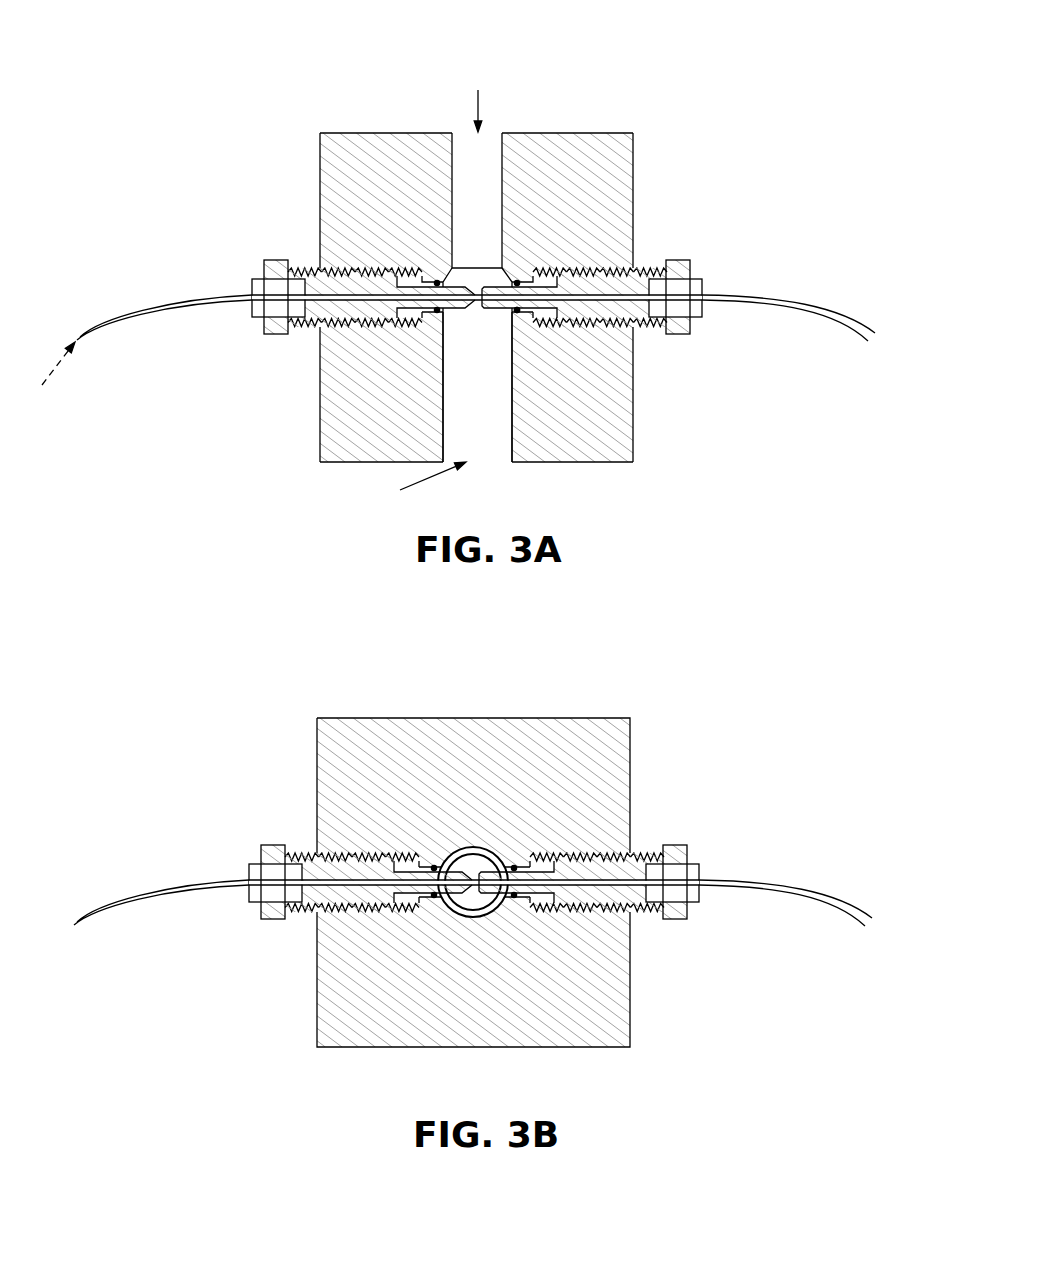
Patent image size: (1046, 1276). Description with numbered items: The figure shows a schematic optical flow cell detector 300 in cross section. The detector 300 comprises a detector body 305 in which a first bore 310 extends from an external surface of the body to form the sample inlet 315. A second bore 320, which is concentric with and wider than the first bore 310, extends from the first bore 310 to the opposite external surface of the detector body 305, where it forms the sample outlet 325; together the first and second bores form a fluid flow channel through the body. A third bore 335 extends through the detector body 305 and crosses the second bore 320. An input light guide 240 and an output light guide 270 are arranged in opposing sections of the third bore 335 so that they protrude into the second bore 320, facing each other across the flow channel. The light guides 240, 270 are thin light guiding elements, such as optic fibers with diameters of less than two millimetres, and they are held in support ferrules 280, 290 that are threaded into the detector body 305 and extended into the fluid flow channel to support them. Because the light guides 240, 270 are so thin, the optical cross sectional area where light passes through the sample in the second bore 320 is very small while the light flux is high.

The optical flow cell detector 300 is at (244, 74).
The detector body 305 is at (348, 130).
The first bore 310 is at (514, 179).
The sample inlet 315 is at (478, 97).
The second bore 320 is at (525, 430).
The sample outlet 325 is at (410, 493).
The support ferrule 280 is at (297, 329).
The support ferrule 290 is at (656, 258).
The input light guide 240 is at (444, 314).
The output light guide 270 is at (480, 315).
The third bore 335 is at (540, 317).